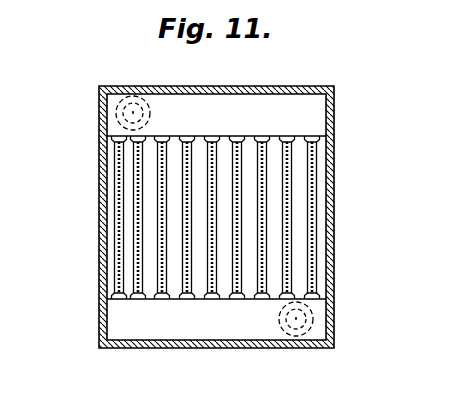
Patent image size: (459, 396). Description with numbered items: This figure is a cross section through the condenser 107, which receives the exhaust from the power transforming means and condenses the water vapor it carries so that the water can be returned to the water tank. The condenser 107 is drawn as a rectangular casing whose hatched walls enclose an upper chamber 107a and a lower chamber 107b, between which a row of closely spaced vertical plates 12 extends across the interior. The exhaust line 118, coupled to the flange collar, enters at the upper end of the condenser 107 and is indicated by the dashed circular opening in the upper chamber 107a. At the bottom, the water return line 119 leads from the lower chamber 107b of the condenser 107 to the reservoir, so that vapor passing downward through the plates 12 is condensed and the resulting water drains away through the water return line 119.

The condenser 107 is at (344, 178).
The upper header chamber of casing 107a is at (149, 103).
The lower header chamber of casing 107b is at (313, 316).
The exhaust line 118 is at (116, 124).
The water return line 119 is at (278, 329).
The plates 12 is at (98, 245).